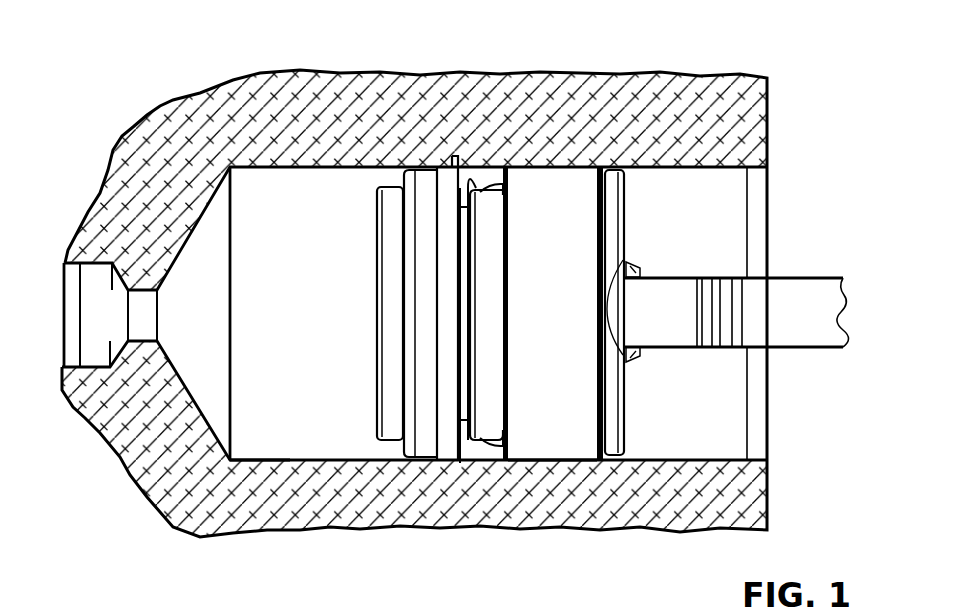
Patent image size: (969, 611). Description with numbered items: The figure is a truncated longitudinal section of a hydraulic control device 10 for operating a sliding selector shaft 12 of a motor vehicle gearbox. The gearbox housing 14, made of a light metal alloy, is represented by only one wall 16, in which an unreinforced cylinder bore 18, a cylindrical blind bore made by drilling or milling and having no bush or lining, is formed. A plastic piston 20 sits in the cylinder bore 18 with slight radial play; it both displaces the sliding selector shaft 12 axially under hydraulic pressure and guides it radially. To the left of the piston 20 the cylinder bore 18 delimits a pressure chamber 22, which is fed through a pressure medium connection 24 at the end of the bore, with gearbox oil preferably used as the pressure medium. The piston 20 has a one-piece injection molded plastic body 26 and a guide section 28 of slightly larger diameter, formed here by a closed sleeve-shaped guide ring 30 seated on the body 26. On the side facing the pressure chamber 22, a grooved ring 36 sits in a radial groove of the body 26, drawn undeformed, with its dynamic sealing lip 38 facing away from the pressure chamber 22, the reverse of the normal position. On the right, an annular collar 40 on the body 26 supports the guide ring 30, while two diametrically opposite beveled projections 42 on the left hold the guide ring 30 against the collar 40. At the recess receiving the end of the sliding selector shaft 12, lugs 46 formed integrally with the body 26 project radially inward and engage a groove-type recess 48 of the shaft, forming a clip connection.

The hydraulic control device 10 is at (674, 72).
The sliding selector shaft 12 is at (737, 312).
The gearbox housing 14 is at (200, 92).
The wall 16 is at (318, 497).
The cylinder bore 18 is at (257, 455).
The plastic piston 20 is at (368, 258).
The pressure chamber 22 is at (498, 313).
The pressure medium connection 24 is at (93, 318).
The body 26 is at (493, 413).
The guide section 28 is at (565, 444).
The guide ring 30 is at (553, 313).
The grooved ring 36 is at (425, 218).
The dynamic sealing lip 38 is at (446, 180).
The annular collar 40 is at (606, 212).
The projections 42 is at (497, 186).
The lugs 46 is at (633, 268).
The groove-type recess 48 is at (627, 283).